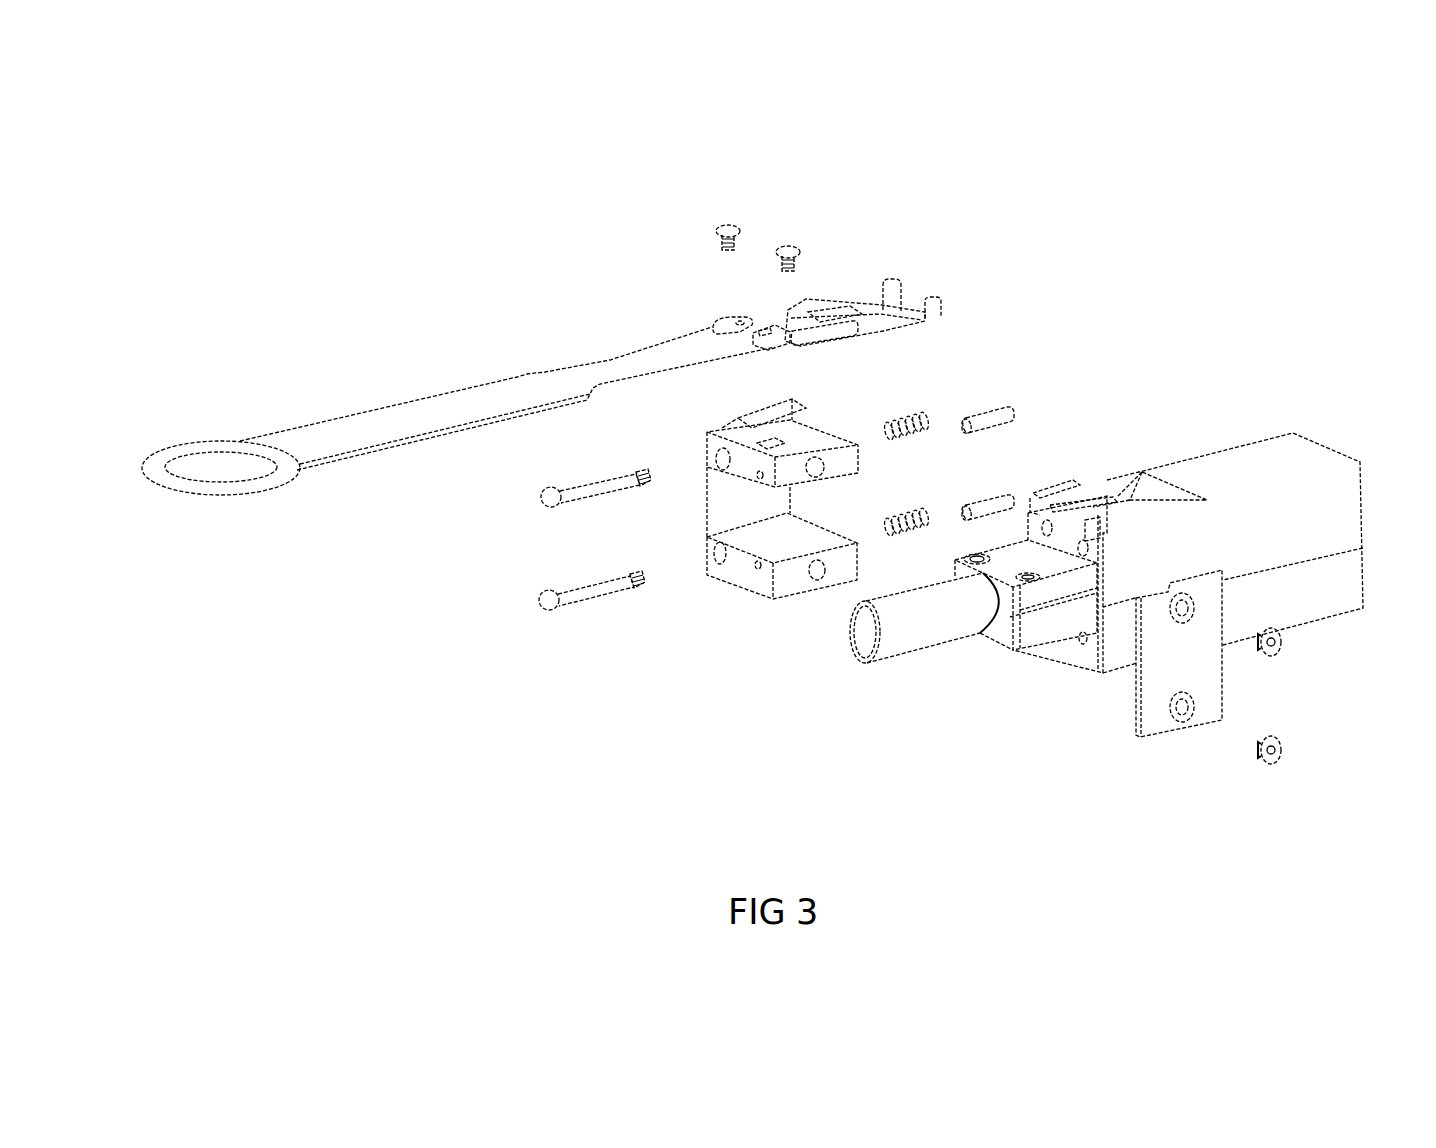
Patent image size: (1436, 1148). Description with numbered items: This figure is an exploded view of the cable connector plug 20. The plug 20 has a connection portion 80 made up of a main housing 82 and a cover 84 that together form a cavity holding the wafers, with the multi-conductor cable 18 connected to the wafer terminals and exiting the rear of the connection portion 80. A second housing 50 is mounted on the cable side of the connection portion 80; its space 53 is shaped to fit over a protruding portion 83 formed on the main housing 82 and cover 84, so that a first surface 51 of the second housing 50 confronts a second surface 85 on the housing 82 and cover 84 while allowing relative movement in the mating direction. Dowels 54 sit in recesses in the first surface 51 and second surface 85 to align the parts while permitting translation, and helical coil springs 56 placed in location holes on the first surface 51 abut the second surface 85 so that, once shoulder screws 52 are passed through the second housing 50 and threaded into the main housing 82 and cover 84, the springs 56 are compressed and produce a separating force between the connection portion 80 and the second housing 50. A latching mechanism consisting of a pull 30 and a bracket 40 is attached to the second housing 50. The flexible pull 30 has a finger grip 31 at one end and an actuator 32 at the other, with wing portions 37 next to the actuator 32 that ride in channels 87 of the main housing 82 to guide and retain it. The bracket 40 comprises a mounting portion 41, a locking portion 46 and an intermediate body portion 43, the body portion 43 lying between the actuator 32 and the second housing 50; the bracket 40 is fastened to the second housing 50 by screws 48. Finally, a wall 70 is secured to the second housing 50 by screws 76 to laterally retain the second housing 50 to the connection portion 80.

The plug 20 is at (308, 111).
The finger grip 31 is at (198, 441).
The pull 30 is at (437, 392).
The mounting portion 41 is at (714, 320).
The bracket 40 is at (762, 322).
The body portion 43 is at (815, 329).
The actuator 32 is at (855, 300).
The wing portions 37 is at (807, 300).
The locking portion 46 is at (890, 278).
The screws 48 is at (727, 222).
The first surface 51 is at (820, 435).
The second housing 50 is at (775, 598).
The space 53 is at (752, 532).
The shoulder screws 52 is at (543, 503).
The helical coil springs 56 is at (915, 420).
The dowels 54 is at (1000, 407).
The cable 18 is at (913, 652).
The protruding portion 83 is at (997, 640).
The cover 84 is at (1100, 672).
The second surface 85 is at (1062, 653).
The channels 87 is at (1033, 506).
The main housing 82 is at (1247, 443).
The connection portion 80 is at (1145, 455).
The wall 70 is at (1142, 733).
The screws 76 is at (1280, 645).